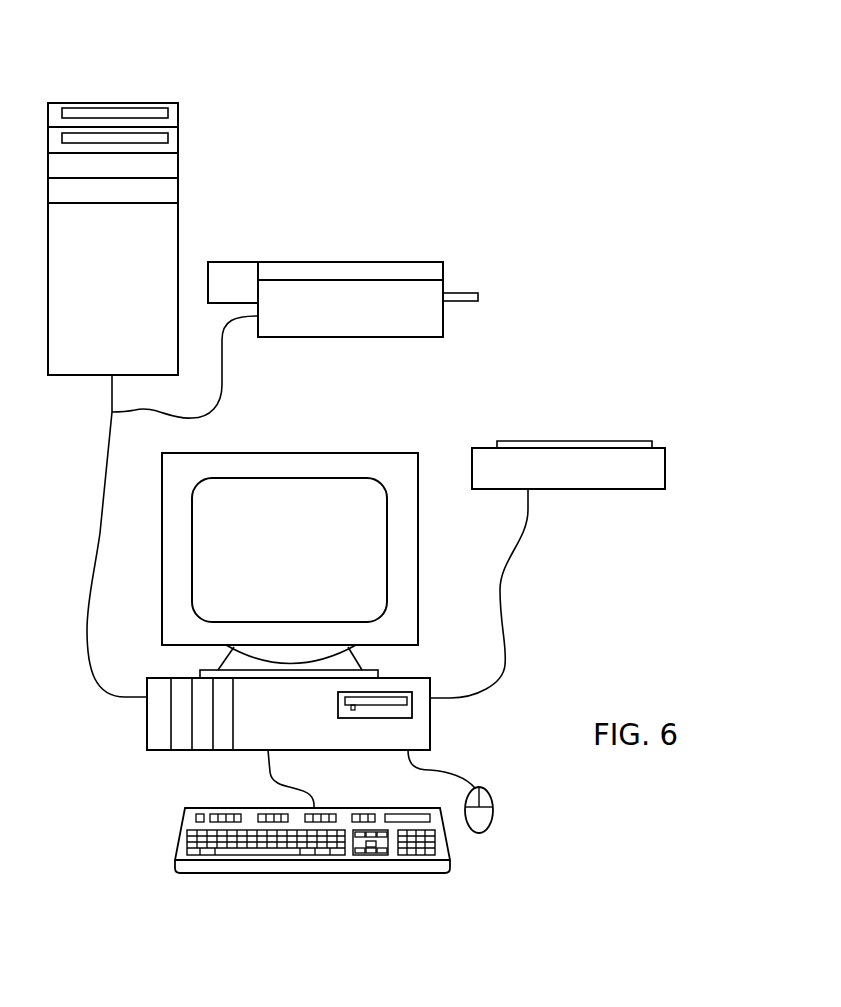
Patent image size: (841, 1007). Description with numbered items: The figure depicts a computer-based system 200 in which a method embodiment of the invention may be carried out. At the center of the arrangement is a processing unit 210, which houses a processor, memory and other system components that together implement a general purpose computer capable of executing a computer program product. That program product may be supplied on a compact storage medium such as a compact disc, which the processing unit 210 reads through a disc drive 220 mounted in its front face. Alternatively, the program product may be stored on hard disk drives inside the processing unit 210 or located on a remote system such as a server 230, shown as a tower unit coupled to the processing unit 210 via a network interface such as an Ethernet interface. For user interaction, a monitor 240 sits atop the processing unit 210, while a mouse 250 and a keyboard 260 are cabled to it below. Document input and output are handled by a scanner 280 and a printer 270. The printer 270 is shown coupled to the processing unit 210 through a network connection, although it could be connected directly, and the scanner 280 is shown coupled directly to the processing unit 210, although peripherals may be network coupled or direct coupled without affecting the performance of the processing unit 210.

The computer-based system 200 is at (597, 161).
The processing unit 210 is at (147, 722).
The disc drive 220 is at (412, 695).
The server 230 is at (179, 222).
The monitor 240 is at (370, 453).
The mouse 250 is at (488, 830).
The keyboard 260 is at (180, 838).
The printer 270 is at (405, 262).
The scanner 280 is at (610, 417).